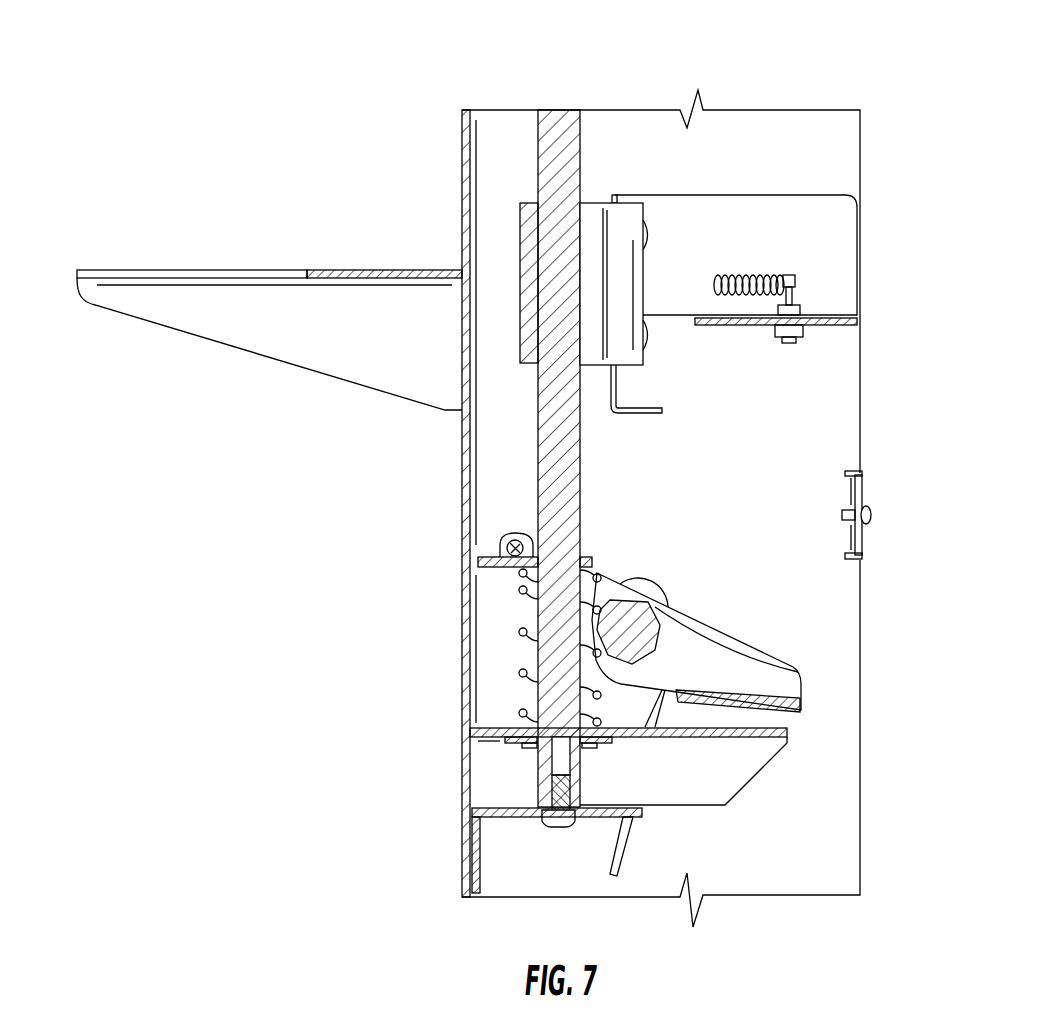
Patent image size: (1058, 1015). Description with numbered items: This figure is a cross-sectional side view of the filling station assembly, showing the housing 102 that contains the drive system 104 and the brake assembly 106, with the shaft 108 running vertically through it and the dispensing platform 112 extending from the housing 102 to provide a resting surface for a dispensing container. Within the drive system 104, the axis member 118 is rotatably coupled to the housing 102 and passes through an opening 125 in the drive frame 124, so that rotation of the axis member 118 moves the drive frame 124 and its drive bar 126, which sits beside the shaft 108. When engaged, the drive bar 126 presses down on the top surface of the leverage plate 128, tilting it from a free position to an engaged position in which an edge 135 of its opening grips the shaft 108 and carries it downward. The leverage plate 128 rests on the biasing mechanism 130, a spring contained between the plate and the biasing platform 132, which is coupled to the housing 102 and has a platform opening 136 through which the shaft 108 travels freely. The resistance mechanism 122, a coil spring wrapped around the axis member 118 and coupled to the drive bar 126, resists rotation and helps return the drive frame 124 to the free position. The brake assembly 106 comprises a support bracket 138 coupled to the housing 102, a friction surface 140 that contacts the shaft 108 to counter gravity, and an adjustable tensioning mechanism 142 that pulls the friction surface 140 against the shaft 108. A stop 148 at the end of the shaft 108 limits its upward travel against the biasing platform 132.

The housing 102 is at (462, 850).
The drive system 104 is at (770, 576).
The brake assembly 106 is at (732, 333).
The shaft 108 is at (580, 127).
The dispensing platform 112 is at (77, 271).
The axis member 118 is at (640, 645).
The resistance mechanism 122 is at (650, 583).
The drive frame 124 is at (745, 640).
The opening 125 is at (802, 680).
The drive bar 126 is at (503, 547).
The leverage plate 128 is at (478, 565).
The biasing mechanism 130 is at (517, 630).
The biasing platform 132 is at (787, 733).
The edge 135 is at (580, 560).
The platform opening 136 is at (530, 773).
The support bracket 138 is at (727, 195).
The friction surface 140 is at (522, 200).
The tensioning mechanism 142 is at (750, 275).
The stop 148 is at (513, 817).